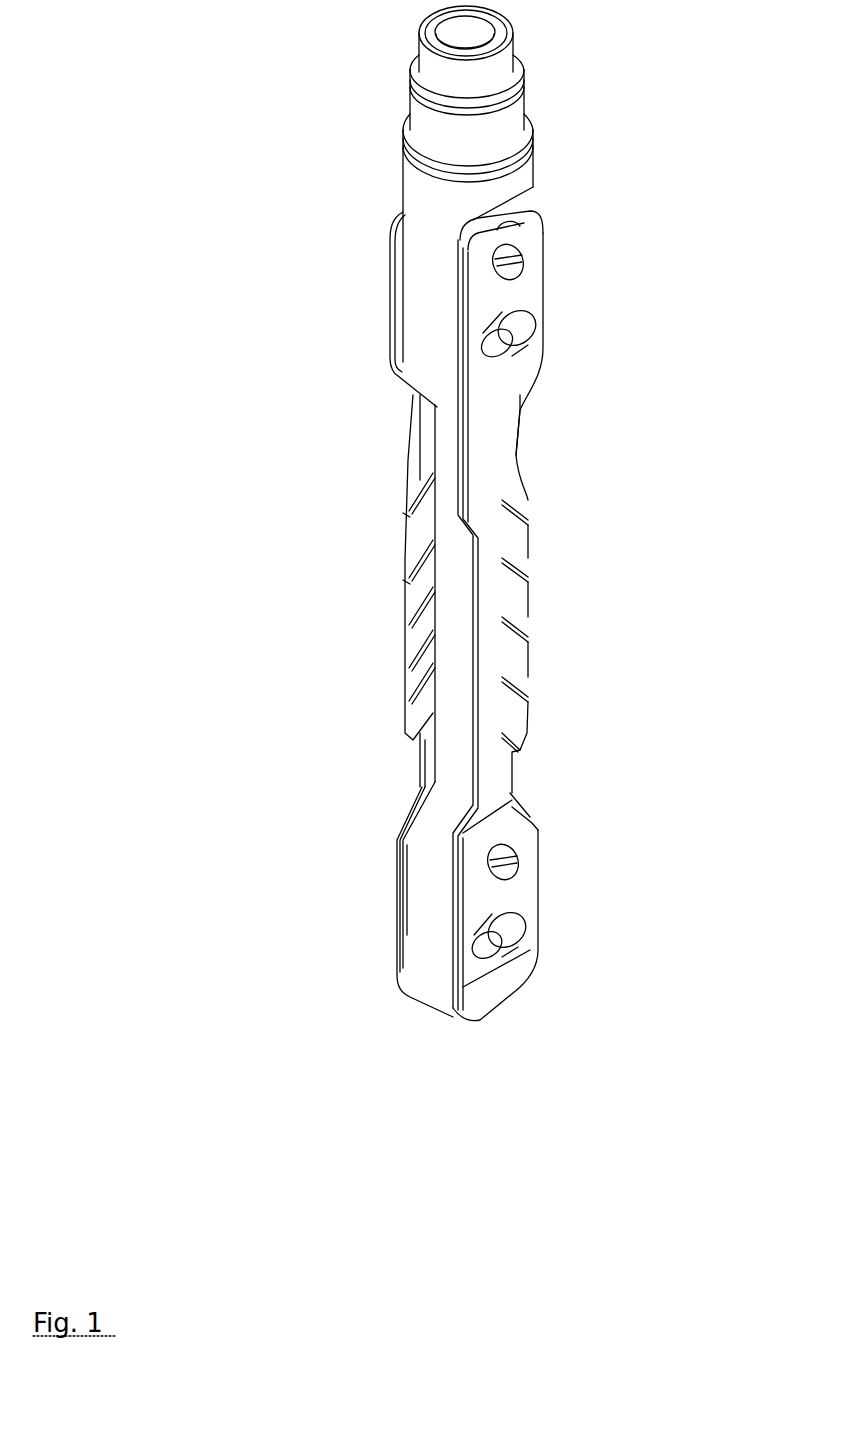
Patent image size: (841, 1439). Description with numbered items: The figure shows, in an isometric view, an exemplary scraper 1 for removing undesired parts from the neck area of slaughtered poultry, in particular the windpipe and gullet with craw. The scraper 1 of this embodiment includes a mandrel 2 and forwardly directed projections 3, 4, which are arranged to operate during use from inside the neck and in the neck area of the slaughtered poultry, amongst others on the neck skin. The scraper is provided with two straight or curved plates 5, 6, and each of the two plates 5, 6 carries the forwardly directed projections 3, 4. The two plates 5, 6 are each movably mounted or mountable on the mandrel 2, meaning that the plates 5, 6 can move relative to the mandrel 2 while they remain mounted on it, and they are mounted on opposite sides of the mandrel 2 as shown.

The scraper 1 is at (597, 532).
The mandrel 2 is at (424, 918).
The forwardly directed projections 3 is at (530, 607).
The forwardly directed projections 4 is at (403, 603).
The plate 5 is at (522, 432).
The plate 6 is at (420, 432).